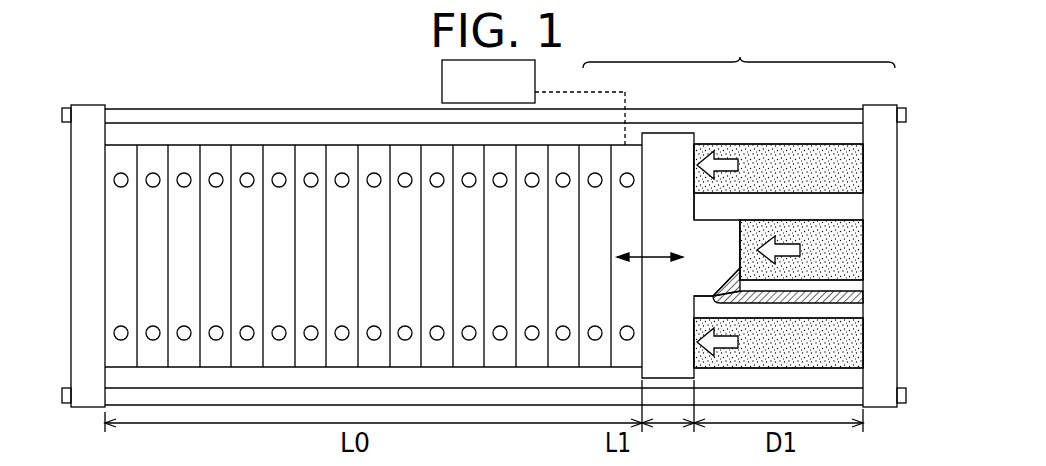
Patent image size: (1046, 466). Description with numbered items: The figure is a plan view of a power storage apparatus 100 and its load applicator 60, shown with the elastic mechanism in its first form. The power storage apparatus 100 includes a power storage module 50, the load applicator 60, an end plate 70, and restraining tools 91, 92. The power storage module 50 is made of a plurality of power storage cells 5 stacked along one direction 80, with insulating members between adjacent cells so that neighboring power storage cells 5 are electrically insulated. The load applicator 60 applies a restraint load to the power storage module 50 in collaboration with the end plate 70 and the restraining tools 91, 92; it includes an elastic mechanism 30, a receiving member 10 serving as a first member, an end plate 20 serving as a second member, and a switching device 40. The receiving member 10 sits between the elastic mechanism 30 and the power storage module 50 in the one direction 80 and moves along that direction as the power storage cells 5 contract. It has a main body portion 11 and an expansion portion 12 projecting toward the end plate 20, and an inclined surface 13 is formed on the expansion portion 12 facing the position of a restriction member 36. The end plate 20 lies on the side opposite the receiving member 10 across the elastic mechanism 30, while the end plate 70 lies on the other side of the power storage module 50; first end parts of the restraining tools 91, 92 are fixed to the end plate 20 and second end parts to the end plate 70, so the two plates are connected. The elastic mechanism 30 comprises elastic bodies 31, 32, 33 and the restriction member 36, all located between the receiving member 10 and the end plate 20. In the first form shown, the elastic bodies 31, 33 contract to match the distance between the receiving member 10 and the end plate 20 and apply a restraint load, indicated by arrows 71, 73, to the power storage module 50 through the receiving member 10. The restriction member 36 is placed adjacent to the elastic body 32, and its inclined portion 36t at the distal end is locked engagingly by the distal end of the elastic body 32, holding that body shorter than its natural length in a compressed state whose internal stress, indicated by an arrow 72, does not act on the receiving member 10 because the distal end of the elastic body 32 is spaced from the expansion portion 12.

The power storage apparatus 100 is at (205, 101).
The power storage cells 5 is at (276, 155).
The receiving member 10 is at (669, 132).
The main body portion 11 is at (676, 207).
The expansion portion 12 is at (722, 232).
The inclined surface 13 is at (703, 298).
The end plate 20 is at (878, 134).
The elastic mechanism 30 is at (817, 217).
The elastic body 31 is at (832, 169).
The elastic body 32 is at (832, 252).
The elastic body 33 is at (832, 343).
The restriction member 36 is at (794, 287).
The inclined portion 36t is at (727, 272).
The switching device 40 is at (535, 78).
The power storage module 50 is at (372, 136).
The load applicator 60 is at (739, 49).
The end plate 70 is at (88, 134).
The arrow 71 is at (697, 165).
The arrow 72 is at (757, 250).
The arrow 73 is at (697, 342).
The one direction 80 is at (662, 259).
The restraining tool 91 is at (229, 116).
The restraining tool 92 is at (287, 398).